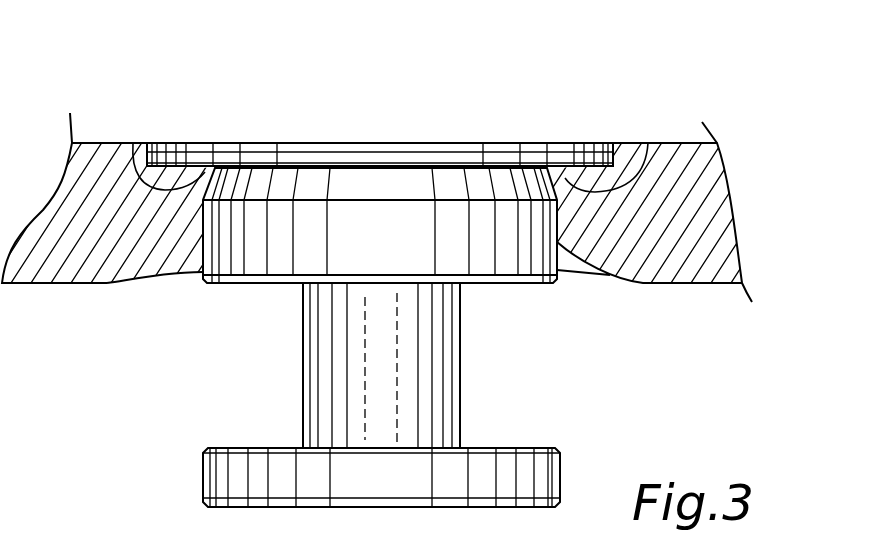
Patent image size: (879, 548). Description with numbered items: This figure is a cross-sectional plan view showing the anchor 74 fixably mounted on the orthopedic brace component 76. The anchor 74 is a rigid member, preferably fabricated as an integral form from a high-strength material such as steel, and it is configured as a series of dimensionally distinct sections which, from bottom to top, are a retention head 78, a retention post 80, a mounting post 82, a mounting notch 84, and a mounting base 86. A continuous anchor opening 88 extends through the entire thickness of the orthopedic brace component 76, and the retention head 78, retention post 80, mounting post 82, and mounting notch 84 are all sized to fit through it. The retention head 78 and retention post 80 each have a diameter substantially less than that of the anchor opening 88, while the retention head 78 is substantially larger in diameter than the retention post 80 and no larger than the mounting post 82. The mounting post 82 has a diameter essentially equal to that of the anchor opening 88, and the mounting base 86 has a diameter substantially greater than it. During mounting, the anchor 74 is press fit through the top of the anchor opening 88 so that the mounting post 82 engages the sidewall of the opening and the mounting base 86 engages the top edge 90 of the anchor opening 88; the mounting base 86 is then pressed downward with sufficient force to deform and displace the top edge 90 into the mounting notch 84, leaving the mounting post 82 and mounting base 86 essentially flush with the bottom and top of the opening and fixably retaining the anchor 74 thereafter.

The anchor 74 is at (460, 357).
The orthopedic brace component 76 is at (95, 143).
The retention head 78 is at (560, 477).
The retention post 80 is at (303, 362).
The mounting post 82 is at (608, 274).
The mounting notch 84 is at (648, 143).
The mounting base 86 is at (460, 143).
The anchor opening 88 is at (202, 275).
The top edge of the anchor opening 90 is at (133, 143).